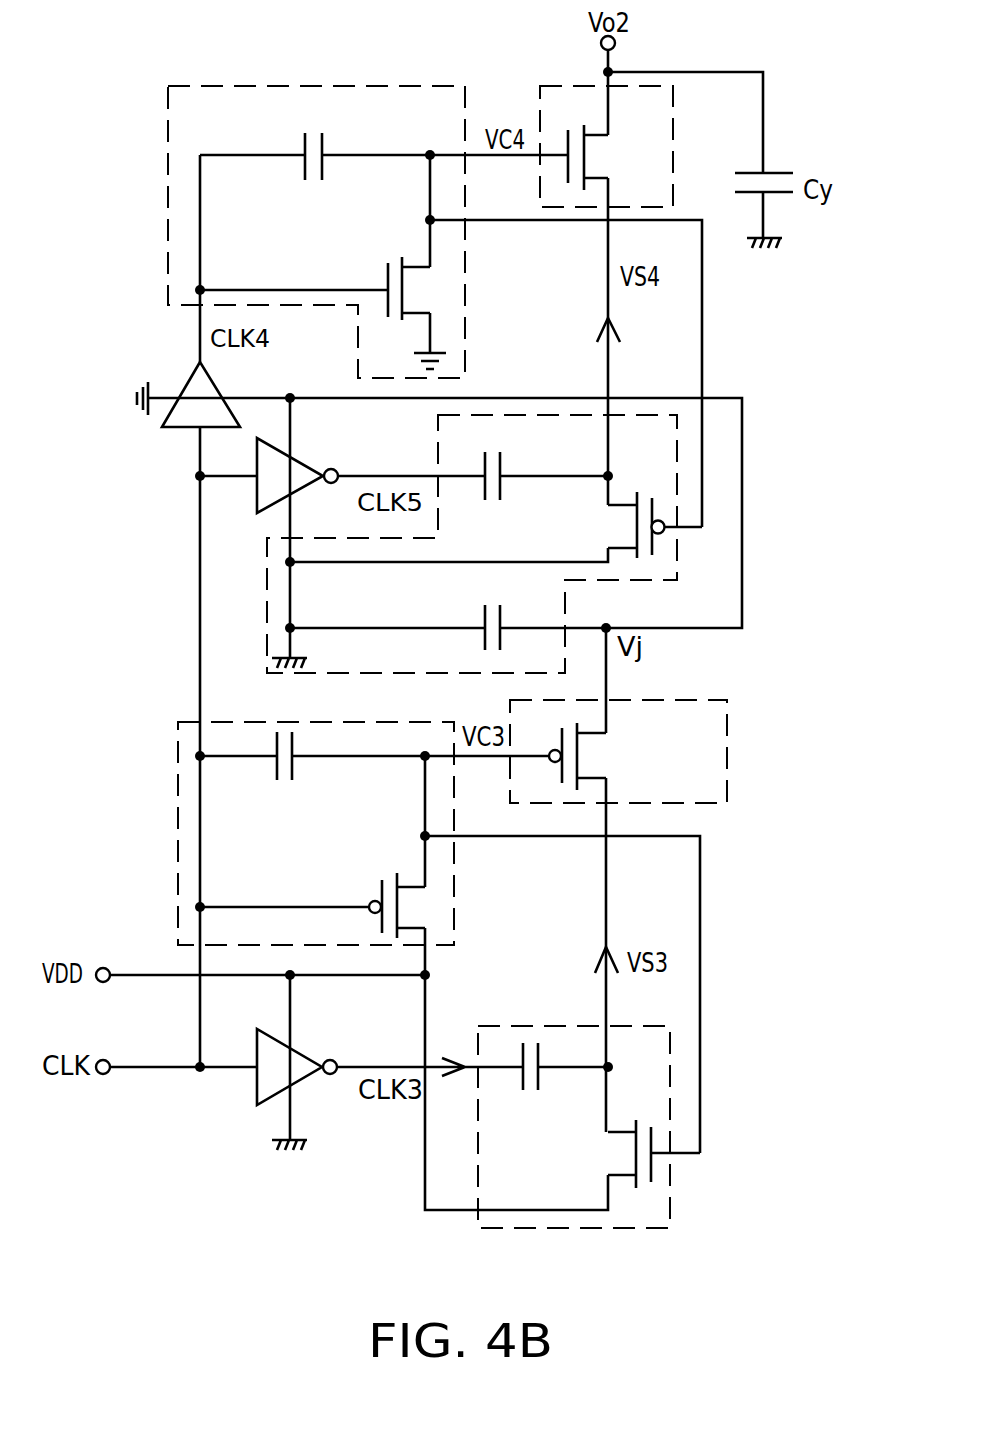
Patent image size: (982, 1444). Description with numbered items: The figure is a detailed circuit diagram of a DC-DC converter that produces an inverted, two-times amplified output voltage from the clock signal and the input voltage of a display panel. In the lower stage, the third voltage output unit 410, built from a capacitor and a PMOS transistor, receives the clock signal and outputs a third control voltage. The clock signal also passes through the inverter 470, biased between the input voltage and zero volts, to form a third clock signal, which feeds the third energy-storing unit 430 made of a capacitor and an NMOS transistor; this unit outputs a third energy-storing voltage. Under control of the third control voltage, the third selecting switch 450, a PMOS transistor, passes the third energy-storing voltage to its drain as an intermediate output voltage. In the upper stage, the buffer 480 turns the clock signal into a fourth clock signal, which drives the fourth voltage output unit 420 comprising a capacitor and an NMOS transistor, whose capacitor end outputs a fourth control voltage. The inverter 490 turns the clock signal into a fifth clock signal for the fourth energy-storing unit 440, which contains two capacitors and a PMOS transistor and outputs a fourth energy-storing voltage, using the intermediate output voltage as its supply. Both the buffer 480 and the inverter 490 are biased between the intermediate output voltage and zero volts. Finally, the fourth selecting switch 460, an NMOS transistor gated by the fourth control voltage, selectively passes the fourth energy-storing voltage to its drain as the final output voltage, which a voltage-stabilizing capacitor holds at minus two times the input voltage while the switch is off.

The third voltage output unit 410 is at (178, 833).
The fourth voltage output unit 420 is at (315, 86).
The third energy-storing unit 430 is at (580, 1230).
The fourth energy-storing unit 440 is at (265, 598).
The third selecting switch 450 is at (727, 740).
The fourth selecting switch 460 is at (577, 86).
The inverter 470 is at (257, 1083).
The buffer 480 is at (187, 385).
The inverter 490 is at (257, 497).